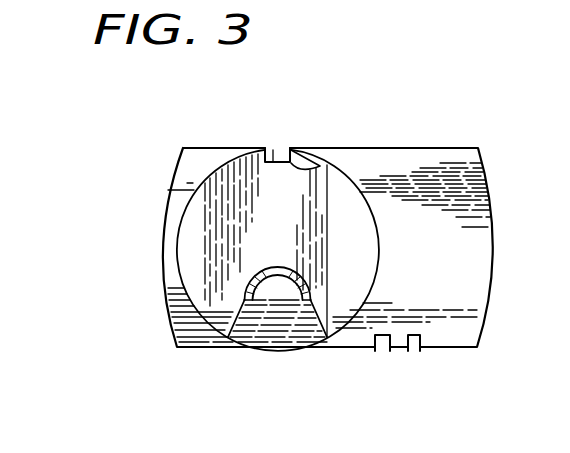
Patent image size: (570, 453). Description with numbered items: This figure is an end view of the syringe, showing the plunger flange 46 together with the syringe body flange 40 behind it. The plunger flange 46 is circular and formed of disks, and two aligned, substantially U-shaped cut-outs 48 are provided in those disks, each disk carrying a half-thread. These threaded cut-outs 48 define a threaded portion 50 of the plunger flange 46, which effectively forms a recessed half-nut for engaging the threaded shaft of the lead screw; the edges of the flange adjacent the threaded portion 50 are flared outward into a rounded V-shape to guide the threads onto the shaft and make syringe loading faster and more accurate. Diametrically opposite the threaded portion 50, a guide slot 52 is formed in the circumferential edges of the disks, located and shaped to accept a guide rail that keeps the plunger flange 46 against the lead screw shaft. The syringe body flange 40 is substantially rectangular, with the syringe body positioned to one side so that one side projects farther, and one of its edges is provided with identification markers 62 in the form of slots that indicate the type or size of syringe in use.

The syringe body flange 40 is at (452, 278).
The plunger flange 46 is at (263, 150).
The U-shaped cut-outs 48 is at (238, 296).
The threaded portion 50 is at (253, 323).
The guide slot 52 is at (318, 168).
The identification markers 62 is at (413, 352).